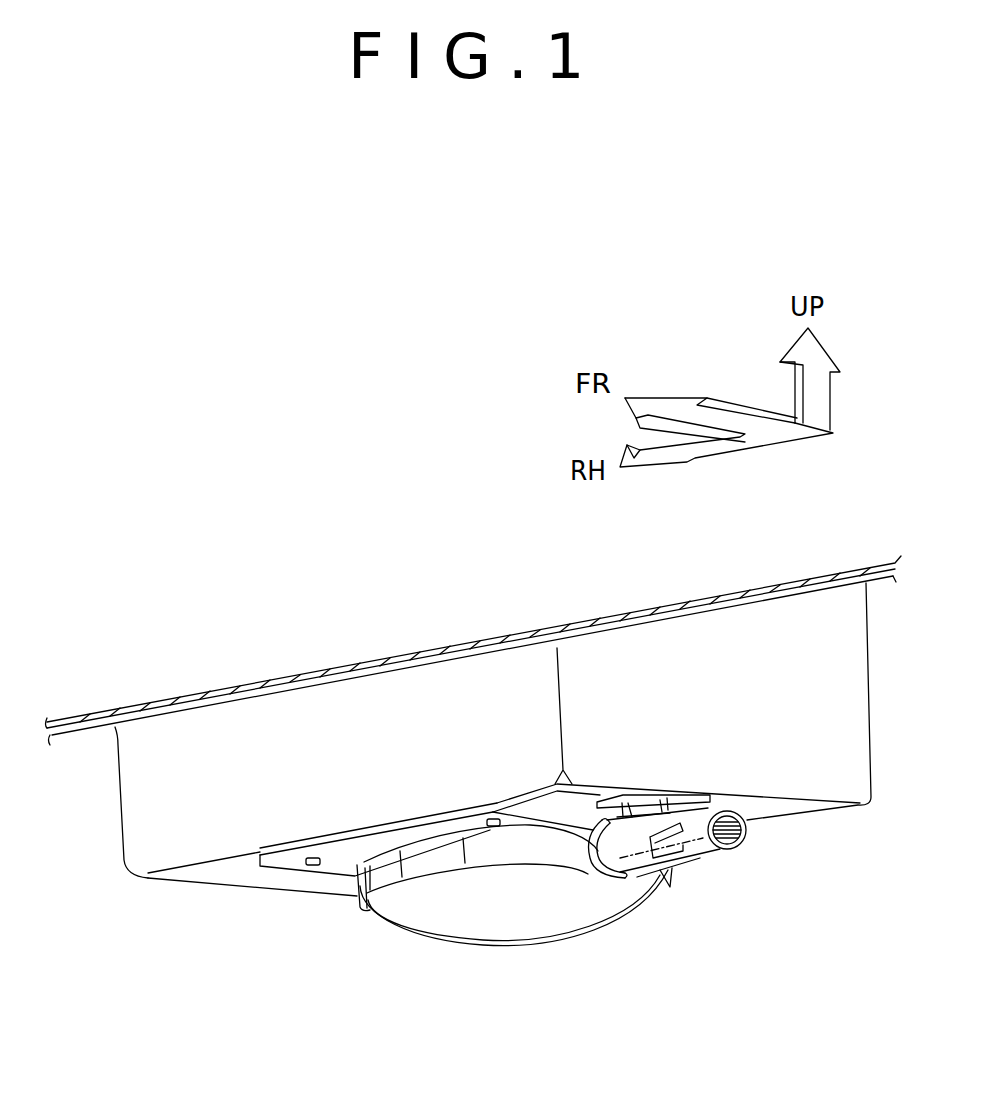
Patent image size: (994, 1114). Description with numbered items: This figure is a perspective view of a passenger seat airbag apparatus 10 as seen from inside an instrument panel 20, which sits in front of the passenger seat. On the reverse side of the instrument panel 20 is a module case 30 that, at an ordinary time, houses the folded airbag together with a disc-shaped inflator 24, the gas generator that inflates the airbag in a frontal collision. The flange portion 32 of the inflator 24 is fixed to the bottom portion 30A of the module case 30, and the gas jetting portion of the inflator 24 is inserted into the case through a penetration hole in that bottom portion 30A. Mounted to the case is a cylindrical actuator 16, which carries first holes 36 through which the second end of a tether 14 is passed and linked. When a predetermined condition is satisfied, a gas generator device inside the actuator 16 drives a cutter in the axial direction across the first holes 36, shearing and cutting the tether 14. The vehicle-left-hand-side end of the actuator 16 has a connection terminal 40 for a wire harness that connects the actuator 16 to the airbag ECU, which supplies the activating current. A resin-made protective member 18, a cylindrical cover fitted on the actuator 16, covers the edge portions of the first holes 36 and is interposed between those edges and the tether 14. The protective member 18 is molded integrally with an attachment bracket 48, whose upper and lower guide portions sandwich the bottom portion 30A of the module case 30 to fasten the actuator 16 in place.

The passenger seat airbag apparatus 10 is at (283, 497).
The instrument panel 20 is at (452, 648).
The module case 30 is at (240, 894).
The bottom portion 30A is at (288, 883).
The flange portion 32 is at (323, 892).
The inflator 24 is at (547, 948).
The actuator 16 is at (742, 870).
The first holes 36 is at (620, 882).
The connection terminal 40 is at (748, 841).
The tether 14 is at (598, 851).
The attachment bracket 48 is at (615, 792).
The protective member 18 is at (668, 880).